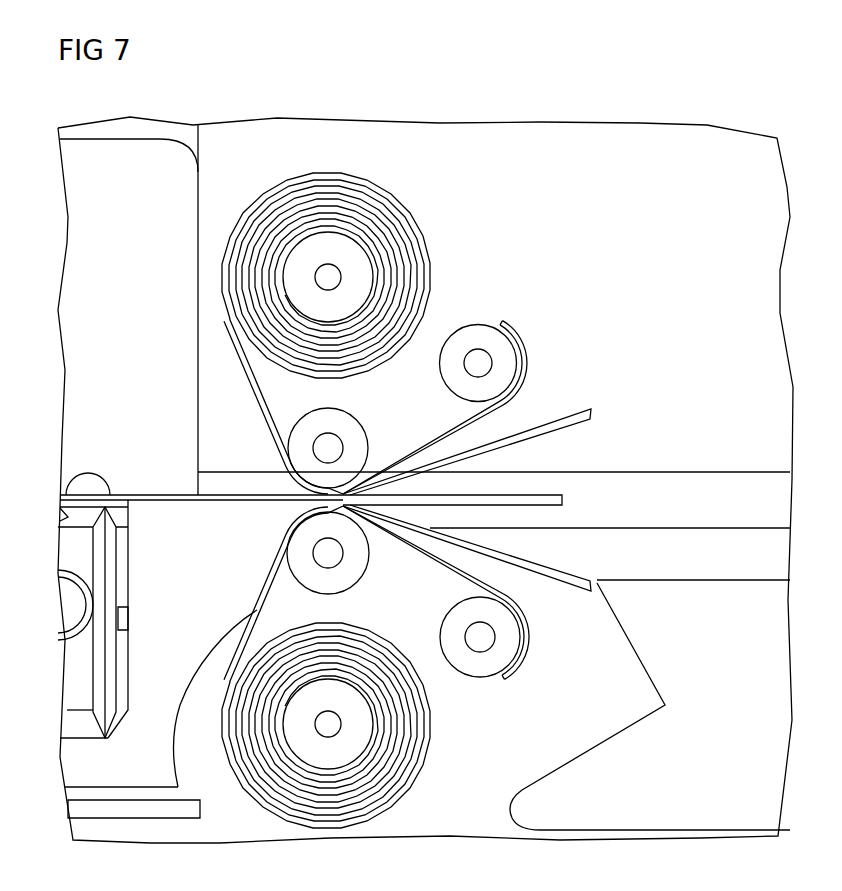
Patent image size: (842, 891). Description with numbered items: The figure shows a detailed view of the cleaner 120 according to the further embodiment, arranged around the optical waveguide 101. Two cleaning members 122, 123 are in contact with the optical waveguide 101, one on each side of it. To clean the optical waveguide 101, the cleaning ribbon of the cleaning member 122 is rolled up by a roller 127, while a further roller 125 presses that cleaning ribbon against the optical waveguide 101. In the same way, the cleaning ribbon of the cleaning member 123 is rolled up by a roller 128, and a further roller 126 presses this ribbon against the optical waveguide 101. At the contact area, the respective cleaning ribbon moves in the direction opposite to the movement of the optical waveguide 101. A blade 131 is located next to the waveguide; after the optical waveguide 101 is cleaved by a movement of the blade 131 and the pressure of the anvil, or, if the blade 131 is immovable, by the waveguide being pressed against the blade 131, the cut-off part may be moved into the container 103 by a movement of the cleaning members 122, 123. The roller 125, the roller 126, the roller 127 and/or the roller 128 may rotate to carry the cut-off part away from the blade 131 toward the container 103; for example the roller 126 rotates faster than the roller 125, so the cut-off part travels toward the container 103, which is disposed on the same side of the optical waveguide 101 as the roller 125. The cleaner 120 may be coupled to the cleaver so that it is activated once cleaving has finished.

The optical waveguide 101 is at (563, 500).
The container 103 is at (653, 663).
The cleaner 120 is at (467, 270).
The cleaning member 122 is at (265, 590).
The cleaning member 123 is at (256, 398).
The roller 125 is at (350, 568).
The roller 126 is at (350, 430).
The roller 127 is at (483, 662).
The roller 128 is at (483, 338).
The blade 131 is at (112, 577).